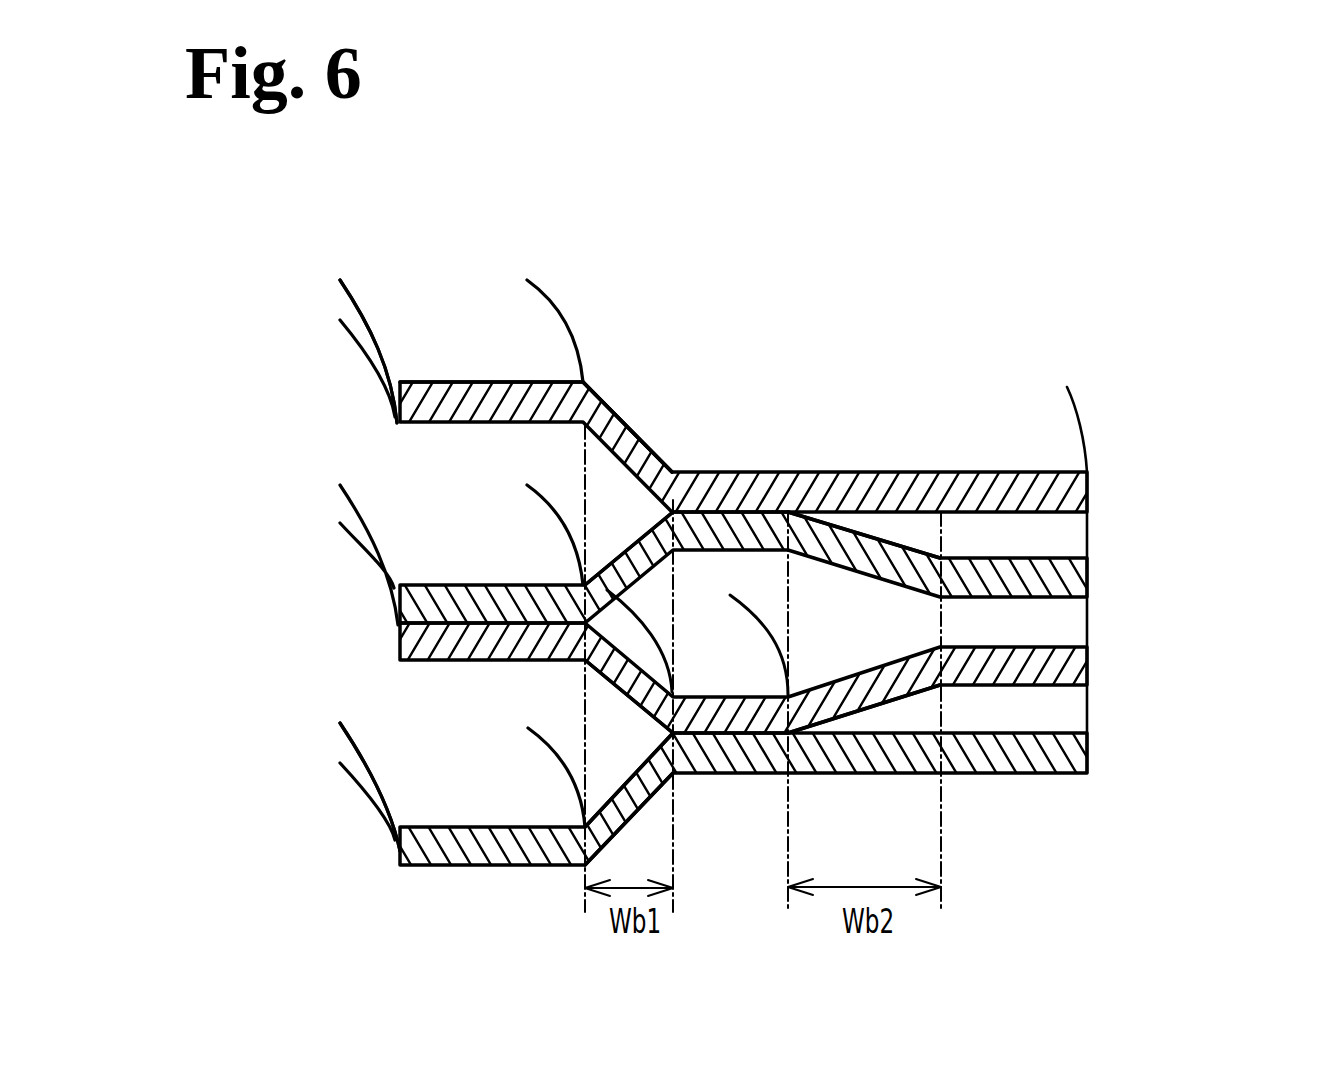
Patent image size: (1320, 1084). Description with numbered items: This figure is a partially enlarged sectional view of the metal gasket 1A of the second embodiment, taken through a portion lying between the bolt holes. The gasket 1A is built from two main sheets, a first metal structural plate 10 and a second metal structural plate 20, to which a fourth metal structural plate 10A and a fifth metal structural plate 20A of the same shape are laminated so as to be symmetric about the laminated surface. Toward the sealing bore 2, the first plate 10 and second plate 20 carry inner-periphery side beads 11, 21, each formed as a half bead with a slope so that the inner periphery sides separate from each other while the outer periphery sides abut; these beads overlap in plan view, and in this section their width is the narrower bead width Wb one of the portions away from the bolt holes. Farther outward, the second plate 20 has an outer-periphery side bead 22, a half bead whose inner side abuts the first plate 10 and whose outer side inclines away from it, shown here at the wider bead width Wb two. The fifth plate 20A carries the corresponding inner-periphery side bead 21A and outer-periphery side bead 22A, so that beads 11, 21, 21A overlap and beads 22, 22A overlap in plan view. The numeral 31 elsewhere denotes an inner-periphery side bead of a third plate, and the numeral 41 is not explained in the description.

The metal gasket 1A is at (498, 347).
The sealing bore 2 is at (247, 600).
The first metal structural plate 10 is at (1157, 483).
The fourth metal structural plate 10A is at (1157, 742).
The inner-periphery side bead 11 is at (641, 460).
The second metal structural plate 20 is at (1157, 566).
The fifth metal structural plate 20A is at (1157, 657).
The inner-periphery side bead 21 is at (692, 623).
The outer-periphery side bead 22 is at (867, 563).
The inner-periphery side bead 21A is at (613, 687).
The outer-periphery side bead 22A is at (978, 817).
The inner-periphery side bead 31 is at (629, 780).
The joint portion 41 is at (700, 845).